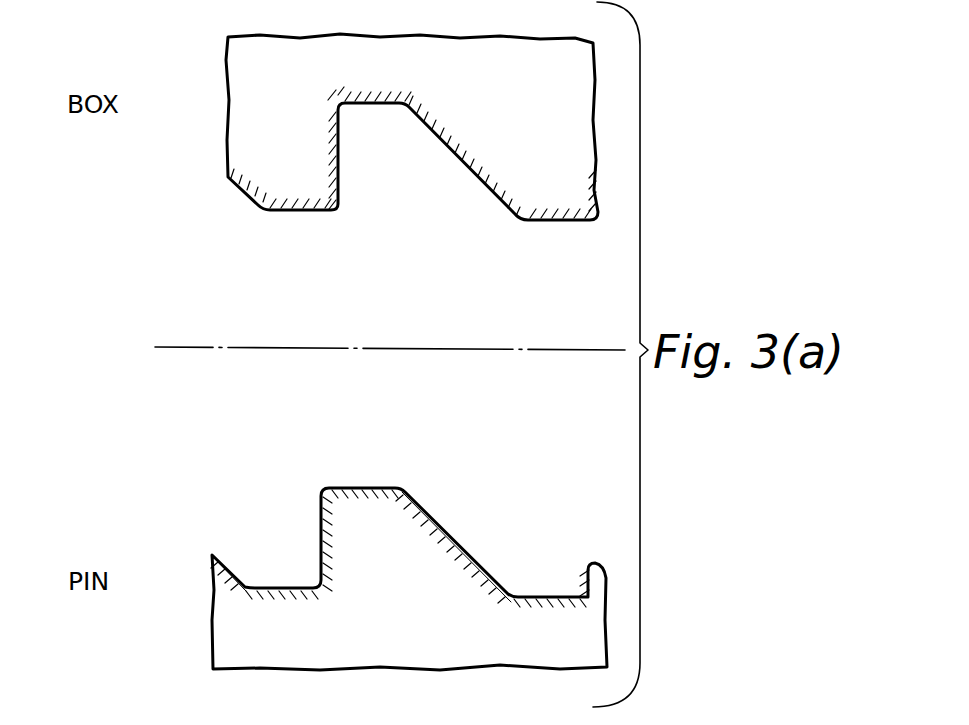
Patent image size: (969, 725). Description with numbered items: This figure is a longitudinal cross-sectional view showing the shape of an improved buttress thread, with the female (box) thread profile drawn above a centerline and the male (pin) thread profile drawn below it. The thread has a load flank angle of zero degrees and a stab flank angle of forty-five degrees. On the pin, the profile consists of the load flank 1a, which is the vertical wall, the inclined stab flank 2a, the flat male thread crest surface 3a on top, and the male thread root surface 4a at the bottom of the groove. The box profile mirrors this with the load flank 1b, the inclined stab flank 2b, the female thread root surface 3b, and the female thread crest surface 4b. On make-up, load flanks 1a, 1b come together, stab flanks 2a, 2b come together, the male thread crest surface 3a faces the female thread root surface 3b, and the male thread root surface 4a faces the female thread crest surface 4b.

The load flank of the male thread 1a is at (317, 538).
The stab flank of the male thread 2a is at (453, 536).
The male thread crest surface 3a is at (360, 486).
The male thread root surface 4a is at (542, 596).
The load flank of the female thread 1b is at (328, 162).
The stab flank of the female thread 2b is at (460, 148).
The female thread root surface 3b is at (365, 92).
The female thread crest surface 4b is at (556, 218).